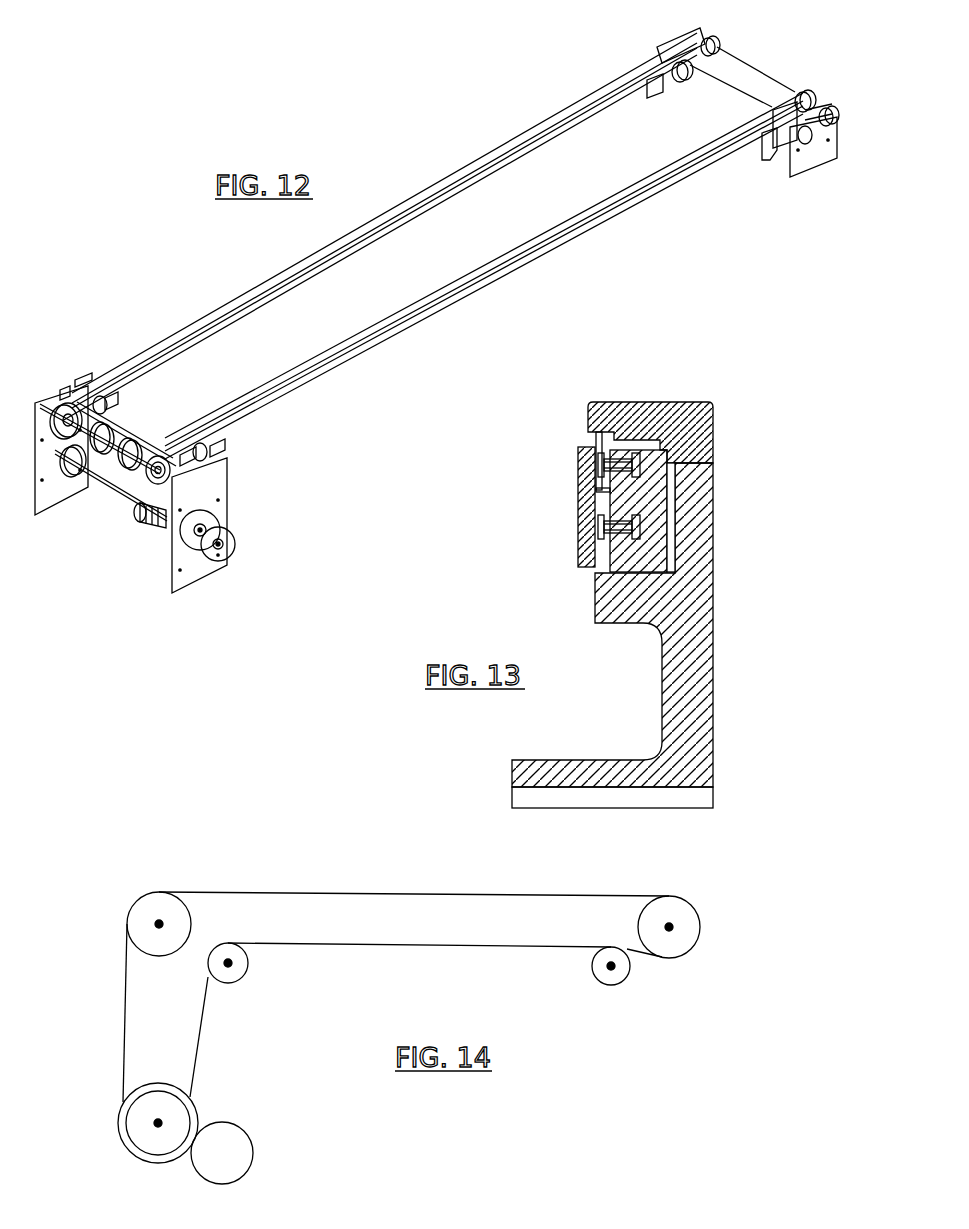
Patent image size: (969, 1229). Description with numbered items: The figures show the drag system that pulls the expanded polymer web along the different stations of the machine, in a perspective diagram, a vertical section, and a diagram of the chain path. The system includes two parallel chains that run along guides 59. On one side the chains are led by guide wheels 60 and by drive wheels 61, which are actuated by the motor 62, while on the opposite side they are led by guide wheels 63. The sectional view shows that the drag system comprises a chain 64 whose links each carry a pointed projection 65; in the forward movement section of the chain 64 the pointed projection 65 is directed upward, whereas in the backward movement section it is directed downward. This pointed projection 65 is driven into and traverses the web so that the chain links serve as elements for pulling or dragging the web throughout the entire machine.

In FIG. 12, the guides 59 is at (560, 235).
In FIG. 13, the guides 59 is at (645, 495).
In FIG. 12, the guide wheels 60 is at (66, 418).
In FIG. 14, the guide wheels 60 is at (223, 948).
In FIG. 12, the drive wheels 61 is at (75, 470).
In FIG. 14, the drive wheels 61 is at (147, 1137).
In FIG. 12, the motor 62 is at (152, 517).
In FIG. 14, the motor 62 is at (232, 1153).
In FIG. 12, the guide wheels 63 is at (690, 38).
In FIG. 14, the guide wheels 63 is at (662, 945).
In FIG. 13, the chain 64 is at (640, 453).
In FIG. 14, the chain 64 is at (405, 893).
In FIG. 13, the pointed projection 65 is at (592, 435).